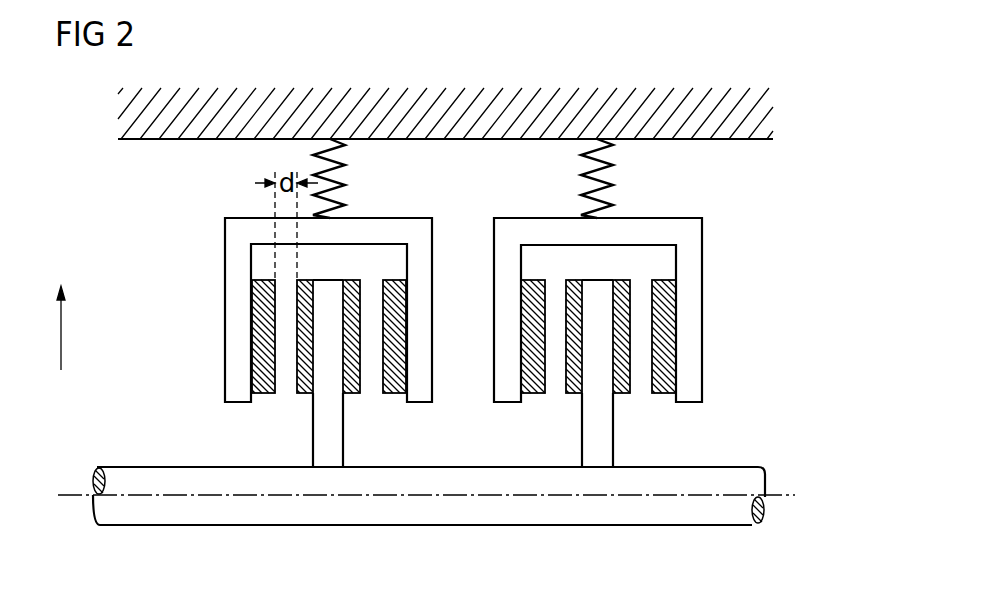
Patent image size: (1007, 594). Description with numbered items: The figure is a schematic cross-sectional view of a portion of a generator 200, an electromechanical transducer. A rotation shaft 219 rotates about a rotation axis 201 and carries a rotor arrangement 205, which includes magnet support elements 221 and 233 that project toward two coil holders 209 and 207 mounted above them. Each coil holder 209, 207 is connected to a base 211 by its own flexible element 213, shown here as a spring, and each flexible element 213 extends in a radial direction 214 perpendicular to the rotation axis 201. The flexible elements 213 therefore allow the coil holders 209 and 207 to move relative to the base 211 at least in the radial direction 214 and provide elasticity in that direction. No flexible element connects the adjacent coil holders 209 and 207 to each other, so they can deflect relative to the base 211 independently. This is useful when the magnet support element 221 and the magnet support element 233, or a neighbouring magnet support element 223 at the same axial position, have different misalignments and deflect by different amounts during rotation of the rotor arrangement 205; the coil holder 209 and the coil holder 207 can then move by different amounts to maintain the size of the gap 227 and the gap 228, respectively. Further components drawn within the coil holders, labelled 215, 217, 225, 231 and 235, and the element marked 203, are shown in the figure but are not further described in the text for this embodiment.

The generator 200 is at (128, 189).
The rotation axis 201 is at (790, 500).
The second drive unit 203 is at (766, 308).
The rotor arrangement 205 is at (682, 455).
The coil holder 207 is at (667, 229).
The coil holder 209 is at (261, 229).
The base 211 is at (771, 119).
The flexible element 213 is at (343, 148).
The radial direction 214 is at (61, 338).
The first outer magnet 215 is at (268, 398).
The second outer magnet 217 is at (400, 392).
The rotation shaft 219 is at (465, 514).
The magnet support element 221 is at (326, 459).
The magnet support element 223 is at (305, 287).
The second inner magnet 225 is at (352, 392).
The gap 227 is at (287, 391).
The gap 228 is at (556, 266).
The outer magnets of second unit 231 is at (534, 392).
The magnet support element 233 is at (592, 439).
The inner magnets of second unit 235 is at (574, 392).